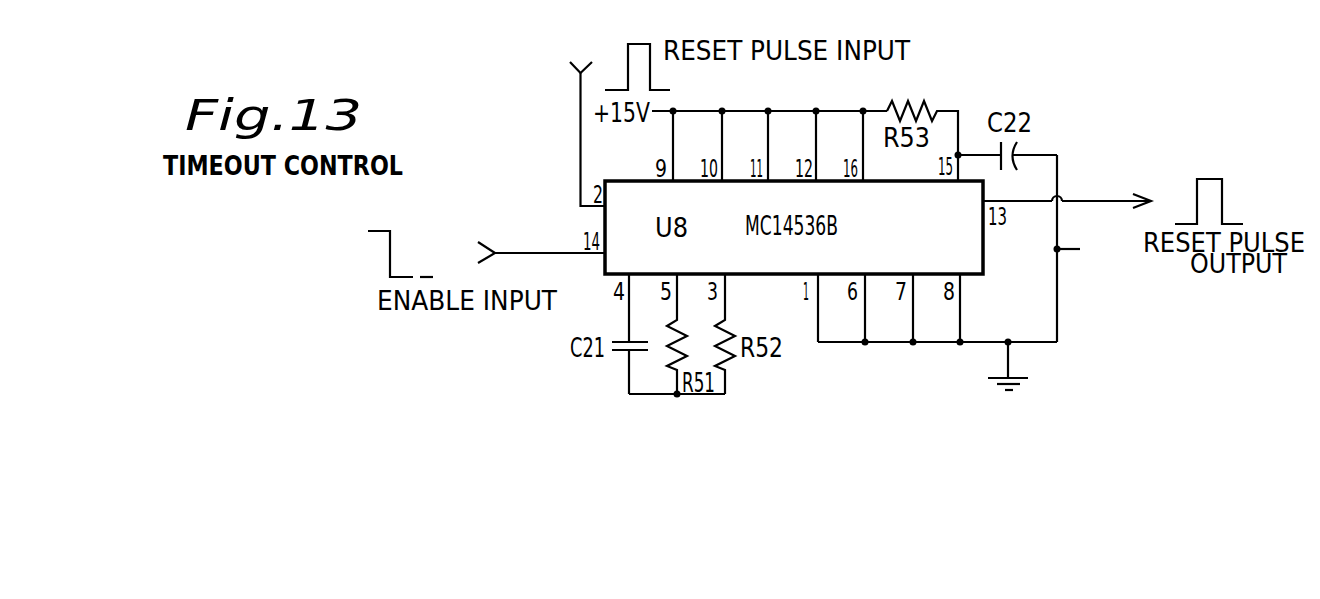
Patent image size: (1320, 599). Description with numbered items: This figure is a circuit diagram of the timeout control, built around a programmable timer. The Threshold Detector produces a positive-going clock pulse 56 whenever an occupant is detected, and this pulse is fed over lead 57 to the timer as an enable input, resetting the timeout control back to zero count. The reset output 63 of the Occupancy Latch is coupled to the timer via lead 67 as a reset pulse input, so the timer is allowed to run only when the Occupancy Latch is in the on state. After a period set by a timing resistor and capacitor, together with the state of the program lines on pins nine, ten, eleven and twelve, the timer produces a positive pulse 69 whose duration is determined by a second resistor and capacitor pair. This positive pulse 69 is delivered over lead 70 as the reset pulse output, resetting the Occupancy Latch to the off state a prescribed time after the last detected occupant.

The clock pulse 56 is at (392, 253).
The lead 57 is at (530, 253).
The reset output 63 is at (637, 41).
The lead 67 is at (580, 122).
The positive pulse 69 is at (1223, 198).
The lead 70 is at (1115, 197).